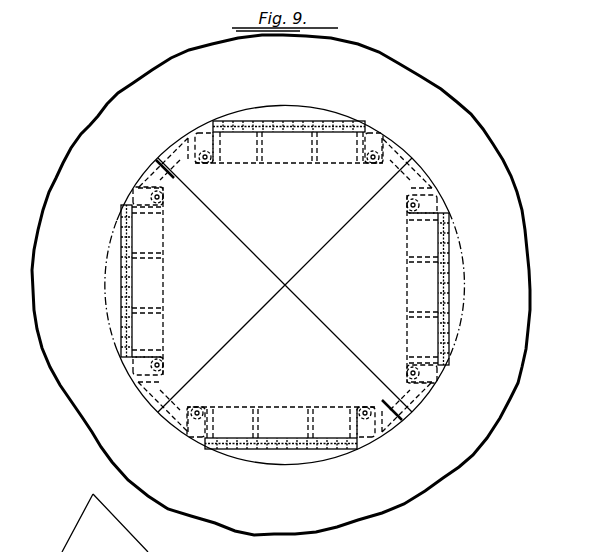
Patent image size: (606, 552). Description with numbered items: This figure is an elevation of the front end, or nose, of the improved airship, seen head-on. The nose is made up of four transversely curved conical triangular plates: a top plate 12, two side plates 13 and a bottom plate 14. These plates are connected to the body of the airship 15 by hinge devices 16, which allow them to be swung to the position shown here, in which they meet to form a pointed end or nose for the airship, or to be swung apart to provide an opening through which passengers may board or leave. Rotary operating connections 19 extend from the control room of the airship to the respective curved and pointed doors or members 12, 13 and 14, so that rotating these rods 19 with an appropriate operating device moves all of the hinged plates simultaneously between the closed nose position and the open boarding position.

The top plate 12 is at (189, 168).
The side plates 13 is at (160, 166).
The bottom plate 14 is at (380, 396).
The body of the airship 15 is at (103, 425).
The hinge devices 16 is at (293, 121).
The rotary operating connections 19 is at (168, 197).